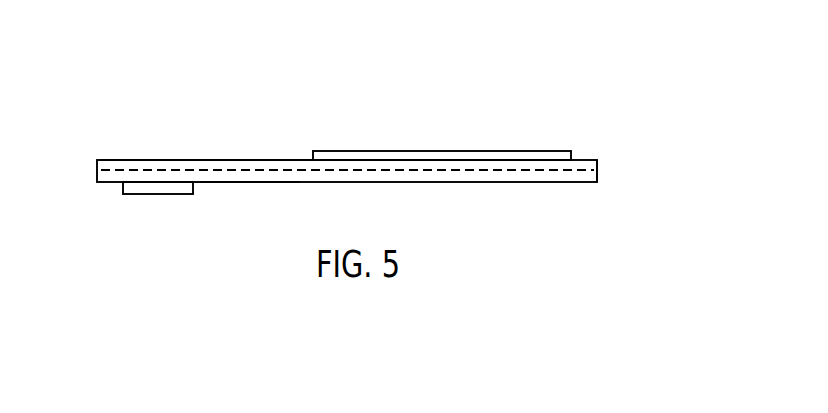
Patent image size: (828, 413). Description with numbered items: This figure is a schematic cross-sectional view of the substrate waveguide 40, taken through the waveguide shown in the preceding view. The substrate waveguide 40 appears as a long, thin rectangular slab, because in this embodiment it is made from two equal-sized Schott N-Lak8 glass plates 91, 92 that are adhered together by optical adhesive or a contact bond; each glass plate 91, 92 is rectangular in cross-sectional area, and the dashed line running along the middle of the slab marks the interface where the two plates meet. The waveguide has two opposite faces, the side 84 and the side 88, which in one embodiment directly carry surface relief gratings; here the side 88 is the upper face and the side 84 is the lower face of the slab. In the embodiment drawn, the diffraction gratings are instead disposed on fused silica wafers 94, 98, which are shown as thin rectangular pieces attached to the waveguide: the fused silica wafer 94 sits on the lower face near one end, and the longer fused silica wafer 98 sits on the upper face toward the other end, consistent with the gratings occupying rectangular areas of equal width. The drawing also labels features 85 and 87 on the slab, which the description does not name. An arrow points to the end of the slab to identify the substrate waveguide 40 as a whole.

The substrate waveguide 40 is at (629, 167).
The side 84 is at (520, 182).
The bottom surface 85 is at (247, 182).
The top surface 87 is at (260, 162).
The side 88 is at (215, 160).
The glass plate 91 is at (598, 181).
The glass plate 92 is at (598, 162).
The fused silica wafer 94 is at (159, 188).
The fused silica wafer 98 is at (492, 153).